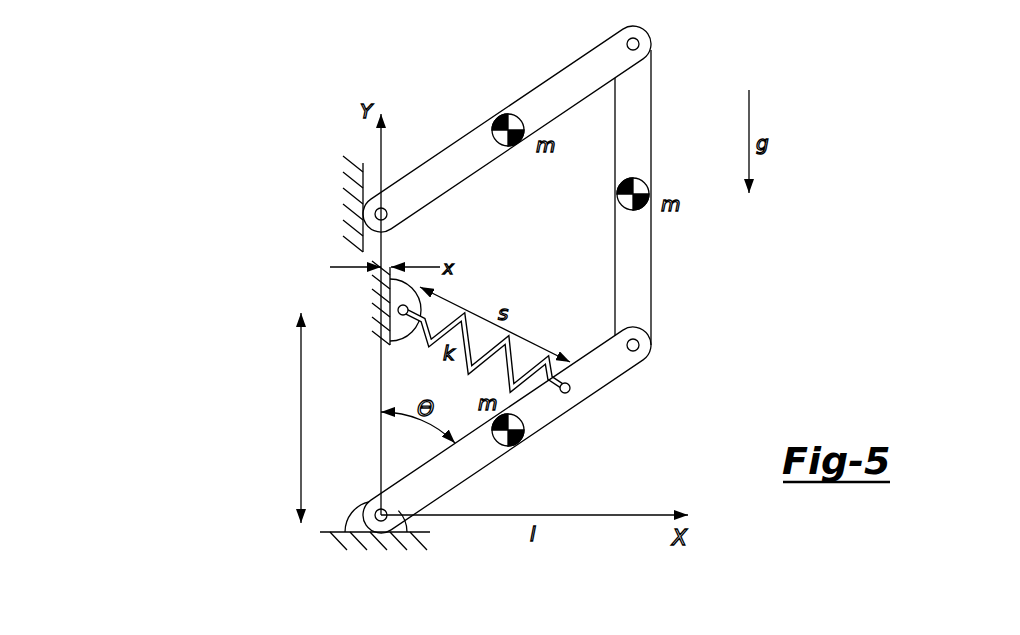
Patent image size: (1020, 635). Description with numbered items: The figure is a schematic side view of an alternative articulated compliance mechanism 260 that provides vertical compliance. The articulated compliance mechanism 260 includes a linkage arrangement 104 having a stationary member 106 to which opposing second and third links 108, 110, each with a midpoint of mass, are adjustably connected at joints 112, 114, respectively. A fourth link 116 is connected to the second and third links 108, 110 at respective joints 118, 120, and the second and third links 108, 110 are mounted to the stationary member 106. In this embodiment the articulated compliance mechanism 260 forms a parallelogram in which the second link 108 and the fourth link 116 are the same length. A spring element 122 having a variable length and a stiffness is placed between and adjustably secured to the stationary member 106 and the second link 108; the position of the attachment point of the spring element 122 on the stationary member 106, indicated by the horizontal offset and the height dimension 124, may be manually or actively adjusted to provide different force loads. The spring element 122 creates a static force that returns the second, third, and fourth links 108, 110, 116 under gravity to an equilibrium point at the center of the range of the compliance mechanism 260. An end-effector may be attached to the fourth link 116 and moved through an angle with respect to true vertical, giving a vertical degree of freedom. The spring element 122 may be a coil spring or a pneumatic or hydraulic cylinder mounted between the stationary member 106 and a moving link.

The linkage arrangement 104 is at (777, 216).
The stationary member 106 is at (375, 299).
The second link 108 is at (590, 398).
The third link 110 is at (441, 153).
The joint 112 is at (383, 533).
The joint 114 is at (365, 212).
The fourth link 116 is at (636, 262).
The joint 118 is at (640, 345).
The joint 120 is at (640, 43).
The spring element 122 is at (462, 308).
The height dimension h 124 is at (301, 447).
The articulated compliance mechanism 260 is at (779, 48).